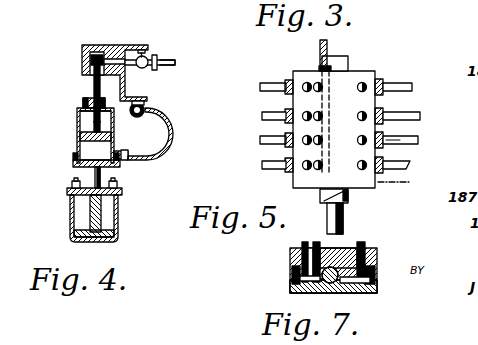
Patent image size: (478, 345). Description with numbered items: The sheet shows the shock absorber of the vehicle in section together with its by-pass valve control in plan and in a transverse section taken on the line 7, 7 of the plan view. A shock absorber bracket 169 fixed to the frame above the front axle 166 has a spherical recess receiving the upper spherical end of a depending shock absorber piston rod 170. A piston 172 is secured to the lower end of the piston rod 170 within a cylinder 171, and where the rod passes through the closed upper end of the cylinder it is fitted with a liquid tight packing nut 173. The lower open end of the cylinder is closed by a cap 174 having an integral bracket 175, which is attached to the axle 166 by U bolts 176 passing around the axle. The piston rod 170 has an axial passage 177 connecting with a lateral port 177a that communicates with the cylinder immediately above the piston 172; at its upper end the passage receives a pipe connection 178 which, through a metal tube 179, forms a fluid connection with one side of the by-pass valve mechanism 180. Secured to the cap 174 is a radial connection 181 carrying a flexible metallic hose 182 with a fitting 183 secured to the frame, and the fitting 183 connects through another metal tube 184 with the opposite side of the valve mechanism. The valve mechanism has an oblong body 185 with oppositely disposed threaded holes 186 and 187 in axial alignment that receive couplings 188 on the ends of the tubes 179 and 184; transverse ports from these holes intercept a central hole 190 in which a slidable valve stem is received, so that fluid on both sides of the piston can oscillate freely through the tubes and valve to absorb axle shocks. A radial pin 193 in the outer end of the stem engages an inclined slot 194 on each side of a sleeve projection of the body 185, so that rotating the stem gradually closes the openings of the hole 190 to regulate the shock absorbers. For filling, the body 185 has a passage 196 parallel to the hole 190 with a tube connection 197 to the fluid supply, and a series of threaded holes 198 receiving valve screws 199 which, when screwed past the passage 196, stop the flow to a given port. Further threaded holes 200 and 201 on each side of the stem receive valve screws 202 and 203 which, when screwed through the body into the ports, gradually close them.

In FIG. 4, the shock absorber bracket 169 is at (104, 45).
In FIG. 4, the axial passage 177 is at (92, 82).
In FIG. 4, the shock absorber piston rod 170 is at (93, 88).
In FIG. 4, the packing nut 173 is at (83, 102).
In FIG. 4, the cylinder 171 is at (77, 118).
In FIG. 4, the piston 172 is at (85, 136).
In FIG. 4, the cap 174 is at (73, 158).
In FIG. 4, the metal tube 179 is at (172, 62).
In FIG. 5, the metal tube 179 is at (402, 110).
In FIG. 4, the pipe connection 178 is at (146, 66).
In FIG. 4, the fitting 183 is at (146, 108).
In FIG. 4, the lateral port 177a is at (103, 128).
In FIG. 4, the flexible metallic hose 182 is at (172, 140).
In FIG. 4, the radial connection 181 is at (128, 158).
In FIG. 4, the bracket 175 is at (122, 191).
In FIG. 4, the U bolts 176 is at (118, 210).
In FIG. 4, the front axle 166 is at (90, 208).
In FIG. 5, the tube connection 197 is at (330, 48).
In FIG. 5, the oblong body 185 is at (356, 78).
In FIG. 7, the oblong body 185 is at (375, 292).
In FIG. 5, the metal tube 184 is at (275, 82).
In FIG. 5, the couplings 188 is at (285, 90).
In FIG. 5, the valve screw 203 is at (291, 118).
In FIG. 7, the valve screw 203 is at (303, 246).
In FIG. 5, the conduit 7 is at (272, 140).
In FIG. 5, the valve screw 202 is at (366, 140).
In FIG. 7, the valve screw 202 is at (366, 250).
In FIG. 5, the by-pass valve mechanism 180 is at (409, 184).
In FIG. 5, the valve screws 199 is at (320, 168).
In FIG. 5, the inclined slot 194 is at (322, 198).
In FIG. 5, the radial pin 193 is at (349, 196).
In FIG. 7, the passage 196 is at (356, 248).
In FIG. 7, the threaded hole 200 is at (378, 270).
In FIG. 7, the threaded hole 201 is at (292, 266).
In FIG. 7, the threaded hole 187 is at (292, 279).
In FIG. 7, the threaded holes 198 is at (292, 286).
In FIG. 7, the threaded hole 186 is at (378, 280).
In FIG. 7, the hole 190 is at (345, 290).